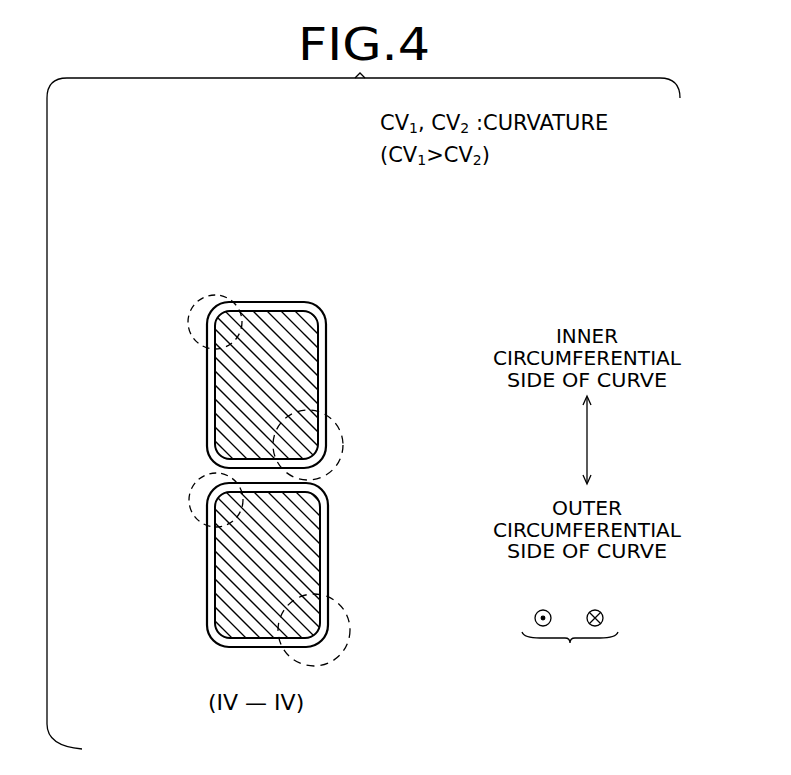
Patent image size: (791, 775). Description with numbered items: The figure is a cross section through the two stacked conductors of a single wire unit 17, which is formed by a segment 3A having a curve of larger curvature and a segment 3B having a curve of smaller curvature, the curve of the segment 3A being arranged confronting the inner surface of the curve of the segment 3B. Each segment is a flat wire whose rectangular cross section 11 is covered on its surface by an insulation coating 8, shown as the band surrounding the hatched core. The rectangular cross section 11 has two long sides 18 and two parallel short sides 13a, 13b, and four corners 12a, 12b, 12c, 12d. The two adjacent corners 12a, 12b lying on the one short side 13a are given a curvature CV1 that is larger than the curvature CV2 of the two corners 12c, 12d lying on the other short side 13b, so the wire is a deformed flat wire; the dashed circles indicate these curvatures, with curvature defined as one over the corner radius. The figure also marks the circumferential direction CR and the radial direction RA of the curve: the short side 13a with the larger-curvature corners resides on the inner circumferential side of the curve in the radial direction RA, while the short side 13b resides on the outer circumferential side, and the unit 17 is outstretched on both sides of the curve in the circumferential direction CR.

The wire unit 17 is at (410, 244).
The segment 3A is at (213, 291).
The segment 3B is at (338, 619).
The insulation coating 8 is at (256, 386).
The long sides 18 is at (327, 370).
The rectangular cross section 11 is at (270, 392).
The corner 12a is at (203, 306).
The corner 12b is at (323, 312).
The corner 12c is at (330, 470).
The corner 12d is at (212, 455).
The short side 13a is at (300, 302).
The short side 13b is at (335, 438).
The curvature CV1 is at (196, 338).
The curvature CV2 is at (345, 420).
The radial direction RA is at (585, 453).
The circumferential direction CR is at (570, 640).